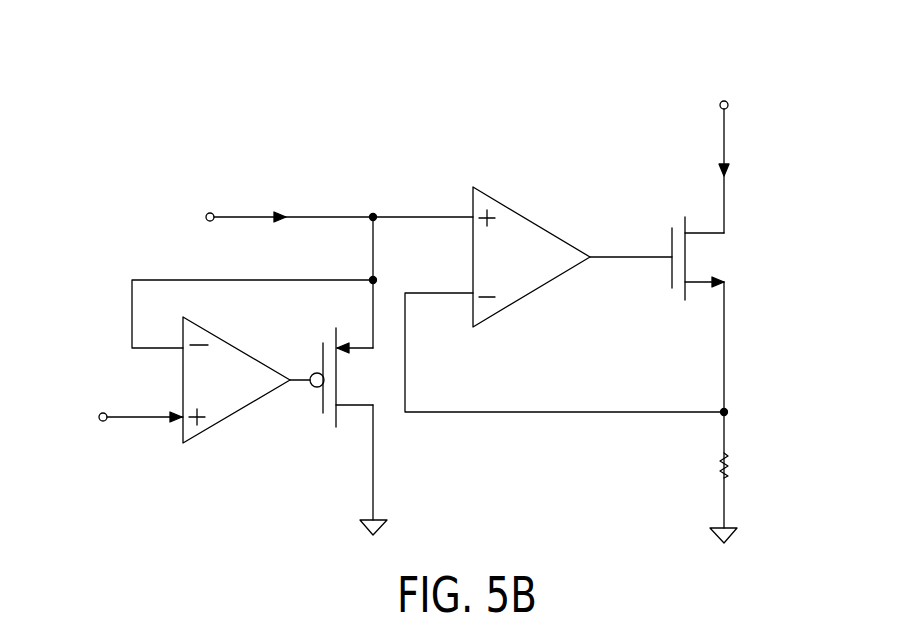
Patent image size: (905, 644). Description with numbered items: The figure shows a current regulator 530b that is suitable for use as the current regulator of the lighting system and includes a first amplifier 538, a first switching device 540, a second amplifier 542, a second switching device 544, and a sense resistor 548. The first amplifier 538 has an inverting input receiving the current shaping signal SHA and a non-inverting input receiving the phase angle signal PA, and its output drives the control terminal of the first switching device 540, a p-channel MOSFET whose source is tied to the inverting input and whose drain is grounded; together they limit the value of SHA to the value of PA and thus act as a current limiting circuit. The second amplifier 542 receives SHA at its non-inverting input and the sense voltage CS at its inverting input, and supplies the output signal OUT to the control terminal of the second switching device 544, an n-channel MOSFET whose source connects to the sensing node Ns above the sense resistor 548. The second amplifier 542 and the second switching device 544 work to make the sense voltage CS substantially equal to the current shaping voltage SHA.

The current regulator 530b is at (142, 100).
The first amplifier 538 is at (220, 423).
The first switching device 540 is at (333, 425).
The second amplifier 542 is at (518, 212).
The second switching device 544 is at (670, 288).
The sense resistor 548 is at (730, 465).